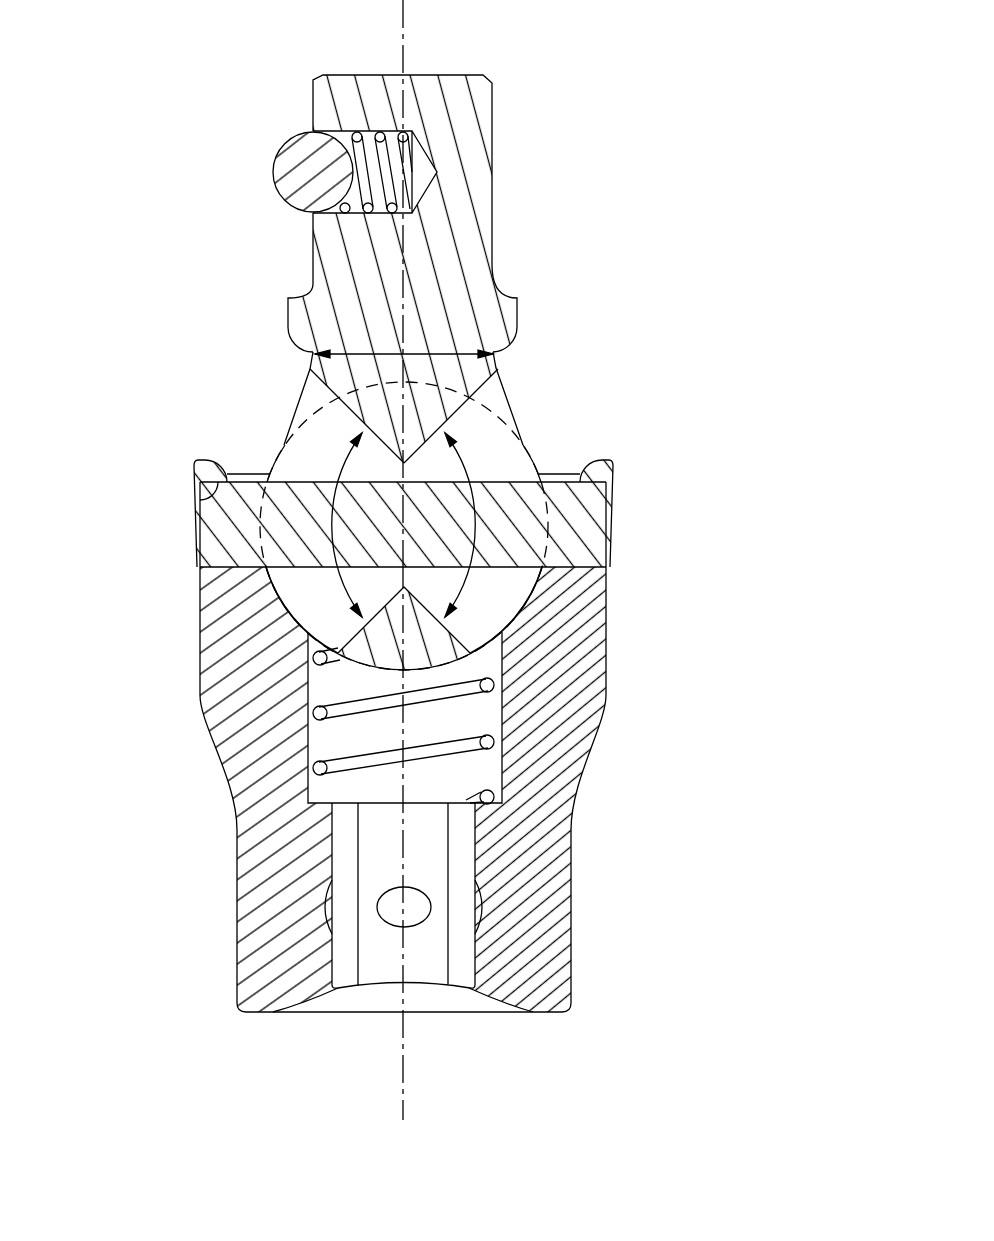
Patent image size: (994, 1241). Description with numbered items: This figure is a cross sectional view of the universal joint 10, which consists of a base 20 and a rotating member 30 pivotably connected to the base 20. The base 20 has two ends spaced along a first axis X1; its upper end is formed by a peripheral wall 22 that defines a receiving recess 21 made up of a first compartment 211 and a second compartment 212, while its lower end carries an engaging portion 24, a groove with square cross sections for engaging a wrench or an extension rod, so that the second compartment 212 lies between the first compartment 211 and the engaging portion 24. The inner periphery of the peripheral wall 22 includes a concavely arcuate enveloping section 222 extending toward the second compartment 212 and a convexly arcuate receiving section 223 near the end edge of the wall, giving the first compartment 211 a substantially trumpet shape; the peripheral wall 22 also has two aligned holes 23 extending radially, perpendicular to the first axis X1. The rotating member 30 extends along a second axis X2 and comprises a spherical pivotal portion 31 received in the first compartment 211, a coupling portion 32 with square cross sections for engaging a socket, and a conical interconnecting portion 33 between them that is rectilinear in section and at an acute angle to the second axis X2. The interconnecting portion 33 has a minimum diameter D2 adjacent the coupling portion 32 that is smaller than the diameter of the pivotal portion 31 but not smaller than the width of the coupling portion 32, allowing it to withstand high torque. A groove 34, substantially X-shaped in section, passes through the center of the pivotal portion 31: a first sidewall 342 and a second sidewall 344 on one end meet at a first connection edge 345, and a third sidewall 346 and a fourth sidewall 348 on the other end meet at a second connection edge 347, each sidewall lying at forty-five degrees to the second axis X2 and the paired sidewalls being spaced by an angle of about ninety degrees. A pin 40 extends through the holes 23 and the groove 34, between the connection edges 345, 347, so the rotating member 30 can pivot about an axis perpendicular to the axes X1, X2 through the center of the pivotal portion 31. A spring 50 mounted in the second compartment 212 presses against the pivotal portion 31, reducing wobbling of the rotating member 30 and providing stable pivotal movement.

The universal joint 10 is at (122, 95).
The base 20 is at (221, 990).
The receiving recess 21 is at (746, 515).
The first compartment 211 is at (611, 490).
The second compartment 212 is at (611, 602).
The peripheral wall 22 is at (200, 620).
The enveloping section 222 is at (292, 600).
The holes 23 is at (200, 501).
The receiving section 223 is at (196, 465).
The engaging portion 24 is at (342, 943).
The rotating member 30 is at (287, 217).
The pivotal portion 31 is at (502, 718).
The coupling portion 32 is at (332, 84).
The interconnecting portion 33 is at (312, 362).
The groove 34 is at (503, 452).
The first sidewall 342 is at (323, 388).
The second sidewall 344 is at (486, 387).
The first connection edge 345 is at (567, 478).
The third sidewall 346 is at (310, 633).
The second connection edge 347 is at (405, 587).
The fourth sidewall 348 is at (493, 655).
The pin 40 is at (218, 535).
The spring 50 is at (467, 748).
The minimum diameter of interconnecting portion D2 is at (437, 342).
The first axis X1 is at (403, 1102).
The second axis X2 is at (403, 9).